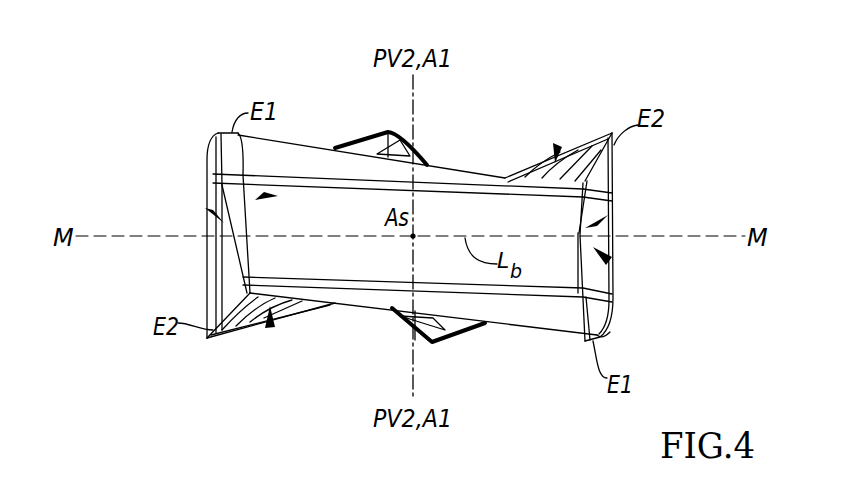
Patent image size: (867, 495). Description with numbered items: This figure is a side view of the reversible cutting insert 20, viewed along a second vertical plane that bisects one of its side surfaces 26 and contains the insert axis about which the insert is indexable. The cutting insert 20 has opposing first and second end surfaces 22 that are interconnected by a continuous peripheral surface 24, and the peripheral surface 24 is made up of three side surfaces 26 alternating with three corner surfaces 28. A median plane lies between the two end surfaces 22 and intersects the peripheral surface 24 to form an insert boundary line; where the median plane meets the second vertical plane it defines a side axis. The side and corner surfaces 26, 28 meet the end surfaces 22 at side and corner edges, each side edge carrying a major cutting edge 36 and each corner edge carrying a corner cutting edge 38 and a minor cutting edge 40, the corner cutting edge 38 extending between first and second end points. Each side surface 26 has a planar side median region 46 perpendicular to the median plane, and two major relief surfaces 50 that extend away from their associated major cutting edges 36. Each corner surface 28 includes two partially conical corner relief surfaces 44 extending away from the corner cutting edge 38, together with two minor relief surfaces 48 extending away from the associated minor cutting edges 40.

The cutting insert 20 is at (460, 138).
The end surface 22 is at (558, 147).
The peripheral surface 24 is at (616, 218).
The side surface 26 is at (215, 187).
The corner surface 28 is at (212, 212).
The major cutting edge 36 is at (300, 142).
The corner cutting edge 38 is at (222, 133).
The minor cutting edge 40 is at (223, 309).
The corner relief surface 44 is at (222, 155).
The side median region 46 is at (480, 227).
The minor relief surface 48 is at (223, 283).
The major relief surface 50 is at (322, 160).